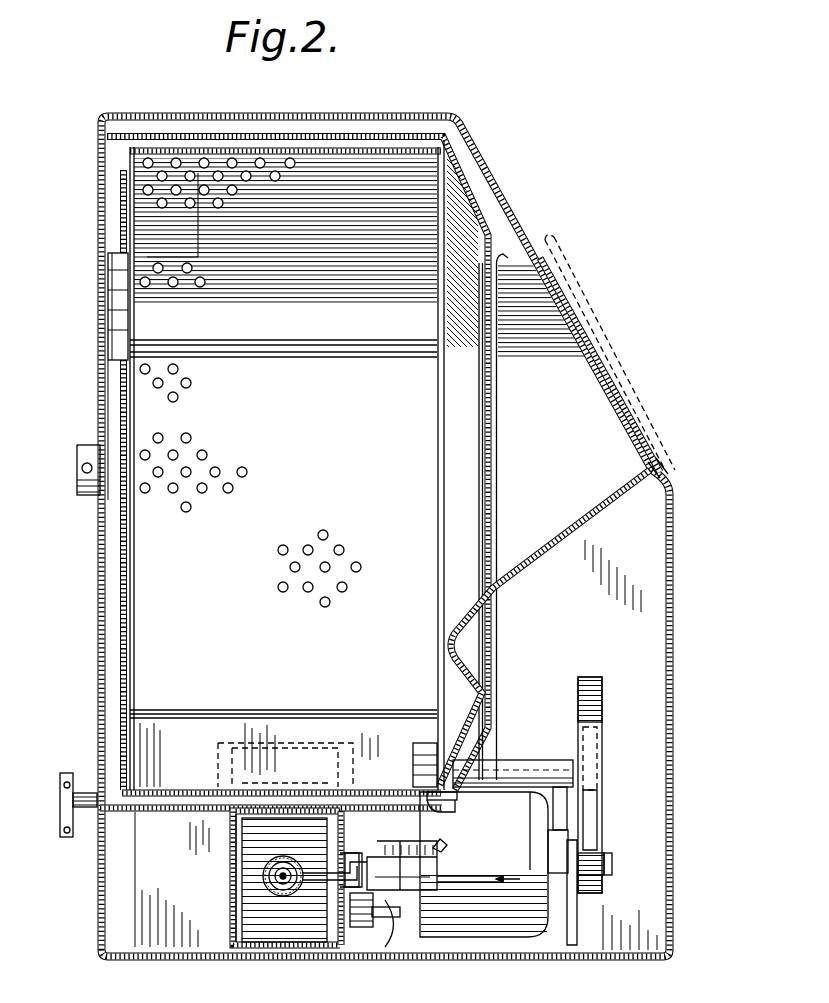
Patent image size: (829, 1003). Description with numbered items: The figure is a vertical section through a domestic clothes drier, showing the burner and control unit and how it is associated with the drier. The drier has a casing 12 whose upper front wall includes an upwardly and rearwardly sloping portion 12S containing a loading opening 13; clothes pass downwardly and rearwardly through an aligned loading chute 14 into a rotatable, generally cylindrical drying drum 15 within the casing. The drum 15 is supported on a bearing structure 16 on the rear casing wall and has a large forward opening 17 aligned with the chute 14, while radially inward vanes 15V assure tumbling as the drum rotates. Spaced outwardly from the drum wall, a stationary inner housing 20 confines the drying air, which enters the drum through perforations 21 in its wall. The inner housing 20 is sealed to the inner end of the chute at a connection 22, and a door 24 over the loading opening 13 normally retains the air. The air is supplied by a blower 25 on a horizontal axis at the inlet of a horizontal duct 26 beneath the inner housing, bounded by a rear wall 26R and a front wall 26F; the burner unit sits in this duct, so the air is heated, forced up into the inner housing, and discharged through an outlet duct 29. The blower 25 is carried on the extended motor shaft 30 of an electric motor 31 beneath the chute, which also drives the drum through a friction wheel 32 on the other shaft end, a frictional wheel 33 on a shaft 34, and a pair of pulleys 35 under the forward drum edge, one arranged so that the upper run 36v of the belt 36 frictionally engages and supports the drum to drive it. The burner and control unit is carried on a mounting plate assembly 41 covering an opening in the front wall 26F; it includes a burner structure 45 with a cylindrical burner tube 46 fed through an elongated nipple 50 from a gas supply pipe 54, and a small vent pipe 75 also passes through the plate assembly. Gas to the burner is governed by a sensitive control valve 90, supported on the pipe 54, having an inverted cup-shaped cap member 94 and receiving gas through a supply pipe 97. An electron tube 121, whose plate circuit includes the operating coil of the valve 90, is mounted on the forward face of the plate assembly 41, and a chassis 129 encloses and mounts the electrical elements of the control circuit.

The casing 12 is at (672, 579).
The sloping portion 12S is at (668, 482).
The loading opening 13 is at (600, 372).
The loading chute 14 is at (553, 537).
The drying drum 15 is at (118, 657).
The vanes 15V is at (393, 353).
The bearing structure 16 is at (80, 497).
The forward opening 17 is at (545, 347).
The inner housing 20 is at (382, 134).
The perforations 21 is at (237, 268).
The seal connection 22 is at (502, 258).
The door 24 is at (633, 388).
The blower 25 is at (253, 870).
The horizontal duct 26 is at (250, 947).
The front wall 26F is at (337, 945).
The rear wall 26R is at (233, 888).
The outlet duct 29 is at (122, 225).
The motor shaft 30 is at (607, 857).
The electric motor 31 is at (497, 788).
The friction wheel 32 is at (603, 888).
The frictional wheel 33 is at (590, 677).
The shaft 34 is at (527, 767).
The pulleys 35 is at (422, 740).
The belt 36 is at (430, 810).
The upper run of belt 36v is at (433, 798).
The mounting plate assembly 41 is at (342, 845).
The burner structure 45 is at (267, 893).
The burner tube 46 is at (272, 890).
The nipple 50 is at (283, 873).
The gas supply pipe 54 is at (510, 923).
The vent pipe 75 is at (310, 888).
The control valve 90 is at (441, 866).
The cap member 94 is at (437, 840).
The supply pipe 97 is at (465, 882).
The electron tube 121 is at (347, 947).
The chassis 129 is at (352, 957).